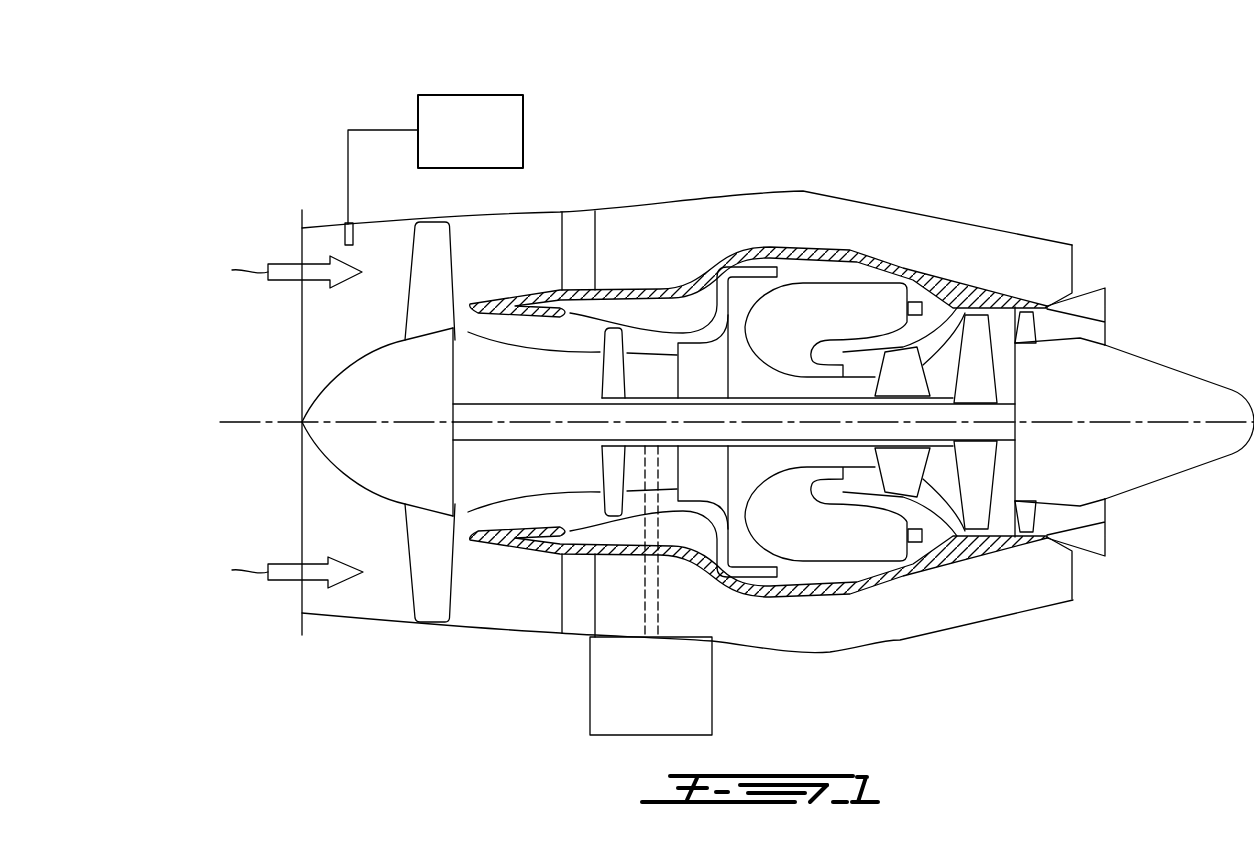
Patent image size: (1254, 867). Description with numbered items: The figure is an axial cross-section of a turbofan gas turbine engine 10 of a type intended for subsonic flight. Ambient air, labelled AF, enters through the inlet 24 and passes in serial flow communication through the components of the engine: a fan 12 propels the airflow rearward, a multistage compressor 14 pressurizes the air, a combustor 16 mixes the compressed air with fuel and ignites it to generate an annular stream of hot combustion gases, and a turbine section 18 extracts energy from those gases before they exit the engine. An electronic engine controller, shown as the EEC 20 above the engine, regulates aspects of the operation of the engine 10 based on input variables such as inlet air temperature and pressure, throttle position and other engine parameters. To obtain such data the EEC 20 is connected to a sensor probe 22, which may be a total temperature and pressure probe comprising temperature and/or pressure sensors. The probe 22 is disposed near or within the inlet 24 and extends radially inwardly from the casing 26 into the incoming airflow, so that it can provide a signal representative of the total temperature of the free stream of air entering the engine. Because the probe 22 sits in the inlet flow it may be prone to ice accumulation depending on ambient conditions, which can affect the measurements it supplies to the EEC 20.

The gas turbine engine 10 is at (727, 379).
The fan 12 is at (427, 538).
The multistage compressor 14 is at (653, 343).
The combustor 16 is at (827, 303).
The turbine section 18 is at (940, 480).
The electronic engine controller 20 is at (525, 130).
The sensor probe 22 is at (343, 235).
The inlet 24 is at (320, 318).
The casing 26 is at (470, 212).